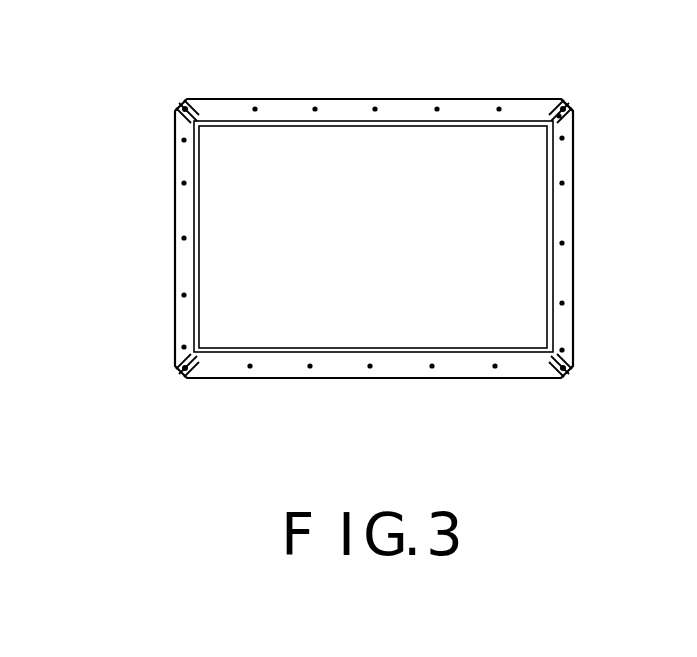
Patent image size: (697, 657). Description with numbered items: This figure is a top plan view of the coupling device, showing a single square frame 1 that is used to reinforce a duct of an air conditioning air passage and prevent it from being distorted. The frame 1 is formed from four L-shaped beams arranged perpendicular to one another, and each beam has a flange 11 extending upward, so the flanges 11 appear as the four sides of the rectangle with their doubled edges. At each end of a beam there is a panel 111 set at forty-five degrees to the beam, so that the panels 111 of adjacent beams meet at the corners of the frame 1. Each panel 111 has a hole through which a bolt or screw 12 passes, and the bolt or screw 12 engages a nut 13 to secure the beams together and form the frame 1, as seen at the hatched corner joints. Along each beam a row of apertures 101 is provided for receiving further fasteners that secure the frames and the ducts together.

The frame 1 is at (597, 88).
The flange 11 is at (353, 125).
The bolts or screws 12 is at (555, 108).
The panel 111 is at (574, 114).
The nuts 13 is at (564, 128).
The apertures 101 is at (566, 305).